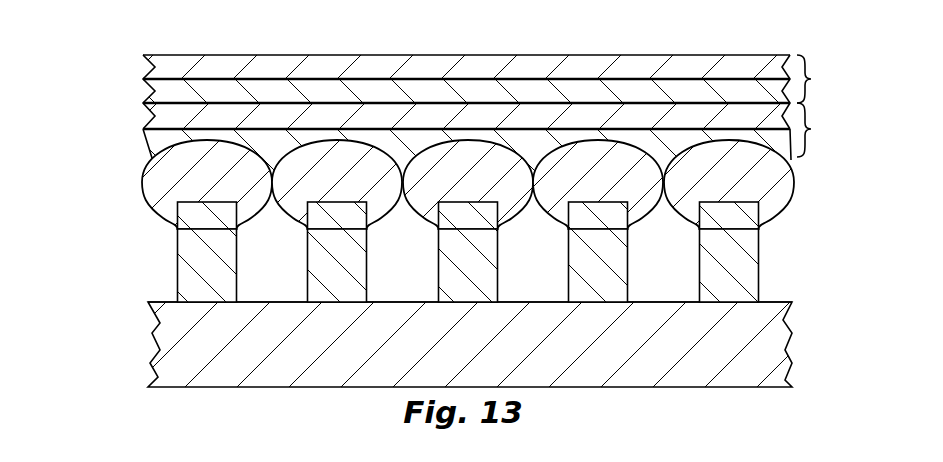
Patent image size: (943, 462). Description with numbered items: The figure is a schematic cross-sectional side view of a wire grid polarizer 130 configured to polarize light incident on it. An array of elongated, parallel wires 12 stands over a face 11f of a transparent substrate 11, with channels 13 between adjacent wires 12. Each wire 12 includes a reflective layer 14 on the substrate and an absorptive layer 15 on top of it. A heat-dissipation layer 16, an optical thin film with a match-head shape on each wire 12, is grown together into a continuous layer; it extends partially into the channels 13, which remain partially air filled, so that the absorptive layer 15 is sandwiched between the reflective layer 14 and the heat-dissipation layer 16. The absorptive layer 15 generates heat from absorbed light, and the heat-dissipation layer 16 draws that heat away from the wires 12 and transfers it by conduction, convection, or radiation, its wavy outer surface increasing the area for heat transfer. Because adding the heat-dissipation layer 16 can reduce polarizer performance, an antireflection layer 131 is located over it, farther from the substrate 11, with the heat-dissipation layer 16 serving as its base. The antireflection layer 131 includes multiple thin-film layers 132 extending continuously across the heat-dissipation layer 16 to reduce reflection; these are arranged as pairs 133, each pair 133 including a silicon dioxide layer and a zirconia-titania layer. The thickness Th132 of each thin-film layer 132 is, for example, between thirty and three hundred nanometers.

The transparent substrate 11 is at (454, 356).
The face of the transparent substrate 11f is at (165, 302).
The wires 12 is at (434, 221).
The channels 13 is at (468, 267).
The reflective layer 14 is at (195, 279).
The absorptive layer 15 is at (196, 224).
The heat-dissipation layer 16 is at (195, 181).
The wire grid polarizer 130 is at (442, 205).
The antireflection layer 131 is at (446, 118).
The thin-film layers 132 is at (387, 77).
The pairs of thin-film layers 133 is at (811, 79).
The thickness of thin-film layer Th132 is at (644, 89).